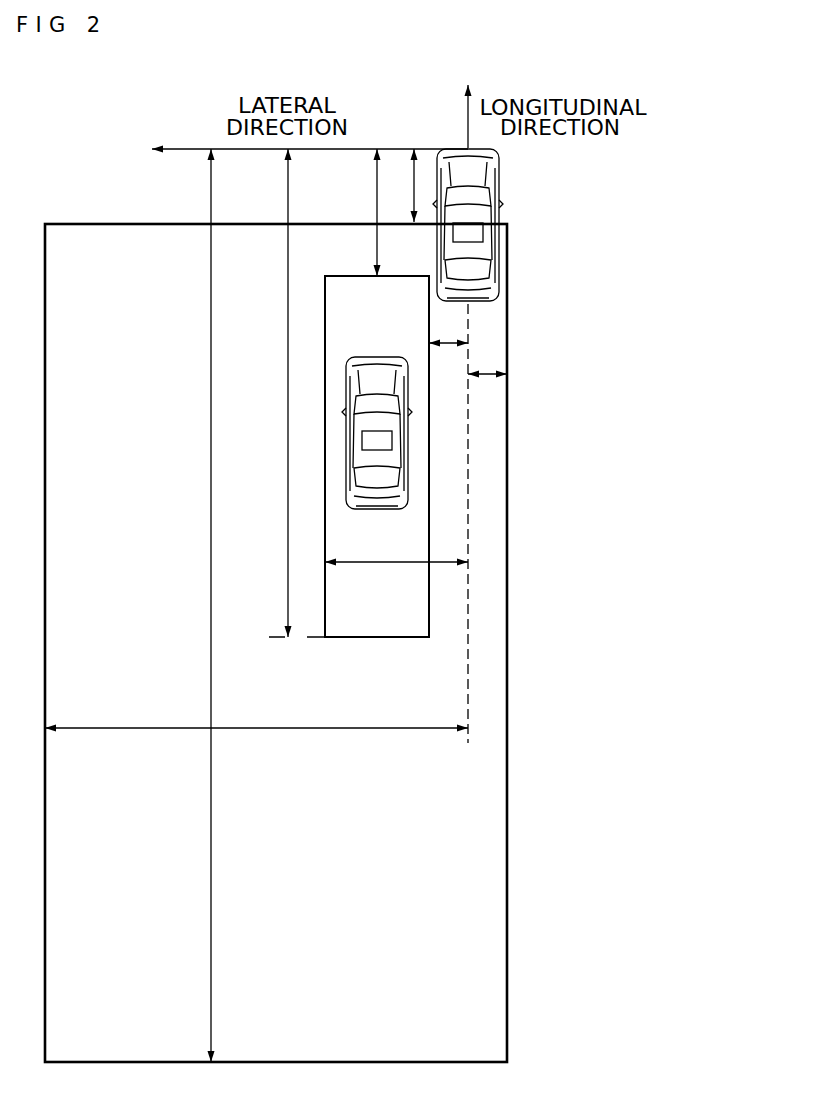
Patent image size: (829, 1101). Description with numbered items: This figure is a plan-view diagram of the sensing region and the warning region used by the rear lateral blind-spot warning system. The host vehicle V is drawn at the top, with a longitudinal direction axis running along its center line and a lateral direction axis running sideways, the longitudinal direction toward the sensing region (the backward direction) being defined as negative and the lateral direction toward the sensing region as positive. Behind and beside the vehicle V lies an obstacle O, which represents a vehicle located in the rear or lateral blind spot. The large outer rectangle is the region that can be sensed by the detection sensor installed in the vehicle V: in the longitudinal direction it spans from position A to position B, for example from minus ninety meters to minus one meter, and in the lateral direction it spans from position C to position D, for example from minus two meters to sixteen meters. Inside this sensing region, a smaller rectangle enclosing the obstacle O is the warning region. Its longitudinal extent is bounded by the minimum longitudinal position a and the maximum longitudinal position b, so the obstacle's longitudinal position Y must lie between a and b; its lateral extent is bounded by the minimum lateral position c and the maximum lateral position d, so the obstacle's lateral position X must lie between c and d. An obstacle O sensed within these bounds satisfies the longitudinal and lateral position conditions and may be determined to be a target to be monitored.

The vehicle V is at (497, 188).
The obstacle O is at (404, 445).
The minimum longitudinal sensing position A is at (195, 605).
The minimum longitudinal direction position of warning region a is at (294, 393).
The maximum longitudinal direction position of warning region b is at (369, 212).
The maximum longitudinal sensing position B is at (406, 185).
The minimum lateral direction position of warning region c is at (448, 332).
The minimum lateral sensing position C is at (487, 361).
The maximum lateral direction position of warning region d is at (396, 549).
The maximum lateral sensing position D is at (256, 715).